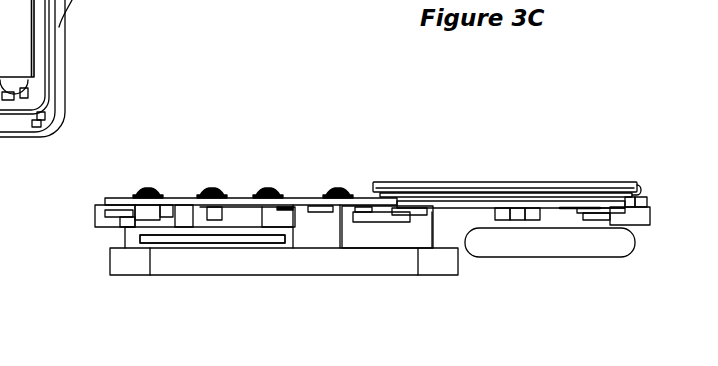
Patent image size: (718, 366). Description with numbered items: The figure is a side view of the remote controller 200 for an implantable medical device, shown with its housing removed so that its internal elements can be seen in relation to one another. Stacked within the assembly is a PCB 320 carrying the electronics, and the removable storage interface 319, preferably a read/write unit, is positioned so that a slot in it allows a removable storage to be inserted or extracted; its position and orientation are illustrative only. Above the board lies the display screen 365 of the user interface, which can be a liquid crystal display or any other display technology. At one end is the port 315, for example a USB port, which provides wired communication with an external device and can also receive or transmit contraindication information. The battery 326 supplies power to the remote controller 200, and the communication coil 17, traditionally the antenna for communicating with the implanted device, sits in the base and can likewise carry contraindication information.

The remote controller 200 is at (413, 112).
The communication coil 17 is at (202, 262).
The PCB 320 is at (127, 203).
The removable storage interface 319 is at (182, 232).
The display screen 365 is at (523, 188).
The port 315 is at (651, 217).
The battery 326 is at (550, 242).